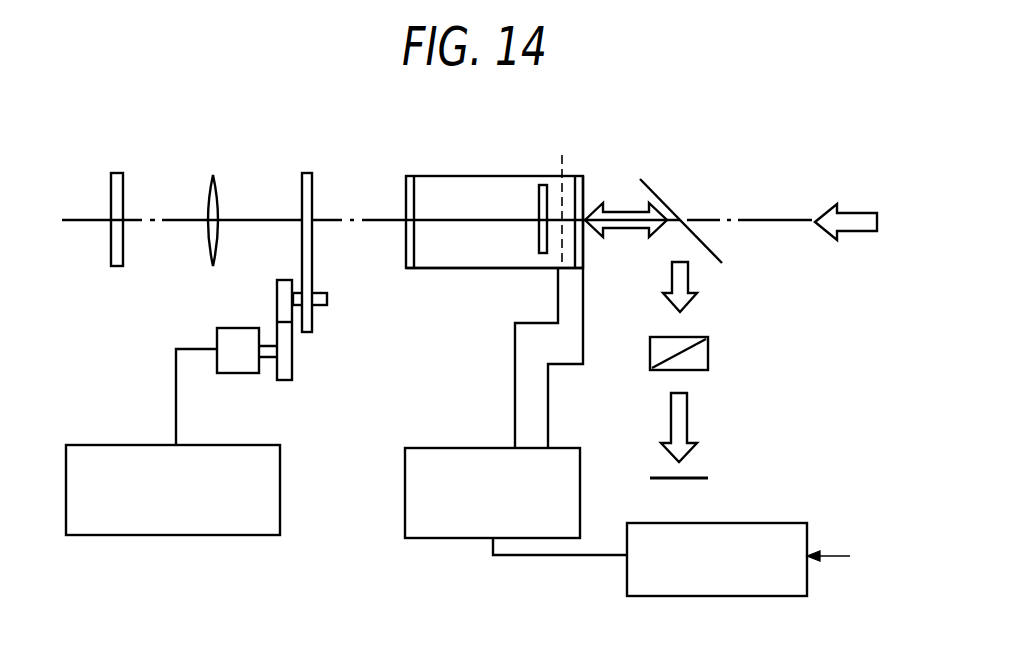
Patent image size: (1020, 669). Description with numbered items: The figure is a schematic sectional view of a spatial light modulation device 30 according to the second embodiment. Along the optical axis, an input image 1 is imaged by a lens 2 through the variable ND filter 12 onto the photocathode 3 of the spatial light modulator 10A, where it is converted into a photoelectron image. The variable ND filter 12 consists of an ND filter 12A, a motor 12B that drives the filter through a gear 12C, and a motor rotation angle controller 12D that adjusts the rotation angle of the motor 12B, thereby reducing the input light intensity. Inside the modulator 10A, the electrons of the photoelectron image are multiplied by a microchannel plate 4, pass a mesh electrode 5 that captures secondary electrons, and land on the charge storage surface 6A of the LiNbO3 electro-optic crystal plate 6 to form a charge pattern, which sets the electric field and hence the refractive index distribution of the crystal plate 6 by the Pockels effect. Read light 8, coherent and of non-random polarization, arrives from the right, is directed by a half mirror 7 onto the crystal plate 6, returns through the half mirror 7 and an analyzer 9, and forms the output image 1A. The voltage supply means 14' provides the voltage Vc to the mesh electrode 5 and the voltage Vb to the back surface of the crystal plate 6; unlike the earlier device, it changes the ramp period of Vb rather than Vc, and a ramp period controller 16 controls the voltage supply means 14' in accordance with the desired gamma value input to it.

The input image 1 is at (115, 175).
The lens 2 is at (212, 178).
The ND filter 12A is at (302, 178).
The variable ND filter 12 is at (322, 322).
The gear 12C is at (266, 303).
The motor 12B is at (233, 374).
The motor rotation angle controller 12D is at (103, 445).
The photocathode 3 is at (415, 200).
The spatial light modulator 10A is at (436, 272).
The microchannel plate 4 is at (543, 185).
The mesh electrode 5 is at (568, 200).
The electro-optic crystal plate 6 is at (584, 190).
The charge storage surface 6A is at (574, 242).
The spatial light modulation device 30 is at (547, 132).
The half mirror 7 is at (648, 186).
The read light 8 is at (852, 208).
The analyzer 9 is at (708, 358).
The output image 1A is at (697, 477).
The voltage supply means 14' is at (510, 403).
The ramp period controller 16 is at (785, 597).